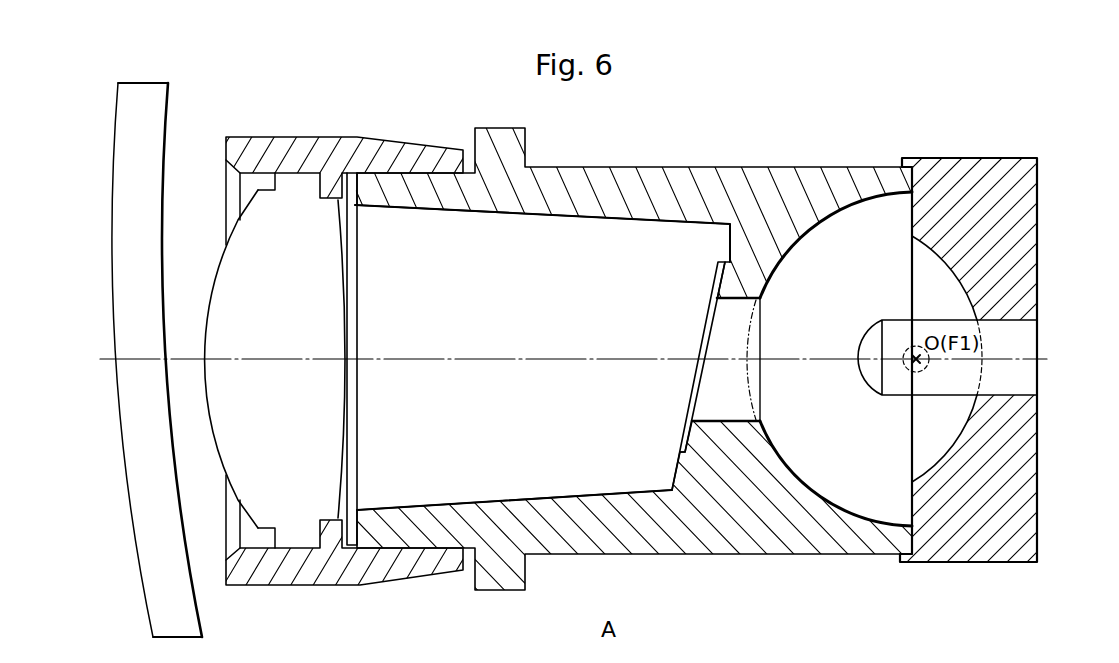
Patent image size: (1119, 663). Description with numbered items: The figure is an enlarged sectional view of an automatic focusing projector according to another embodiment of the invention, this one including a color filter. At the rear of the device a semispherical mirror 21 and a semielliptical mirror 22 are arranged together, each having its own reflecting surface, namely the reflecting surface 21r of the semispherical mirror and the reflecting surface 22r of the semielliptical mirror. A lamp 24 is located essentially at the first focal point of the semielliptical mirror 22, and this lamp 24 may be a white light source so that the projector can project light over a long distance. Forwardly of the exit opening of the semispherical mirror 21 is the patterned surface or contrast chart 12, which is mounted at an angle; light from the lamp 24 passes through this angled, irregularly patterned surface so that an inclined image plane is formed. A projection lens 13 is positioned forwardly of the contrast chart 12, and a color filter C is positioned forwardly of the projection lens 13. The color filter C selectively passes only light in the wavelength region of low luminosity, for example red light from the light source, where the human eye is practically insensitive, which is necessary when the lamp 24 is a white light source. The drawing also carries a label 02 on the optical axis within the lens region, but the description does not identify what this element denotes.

The projection lens 13 is at (330, 323).
The objective lens block 02 is at (472, 359).
The contrast chart 12 is at (707, 323).
The semispherical mirror 21 is at (867, 182).
The reflecting surface of semispherical mirror 21r is at (825, 220).
The semielliptical mirror 22 is at (1018, 296).
The reflecting surface of semielliptical mirror 22r is at (968, 280).
The lamp 24 is at (905, 372).
The color filter C is at (142, 510).